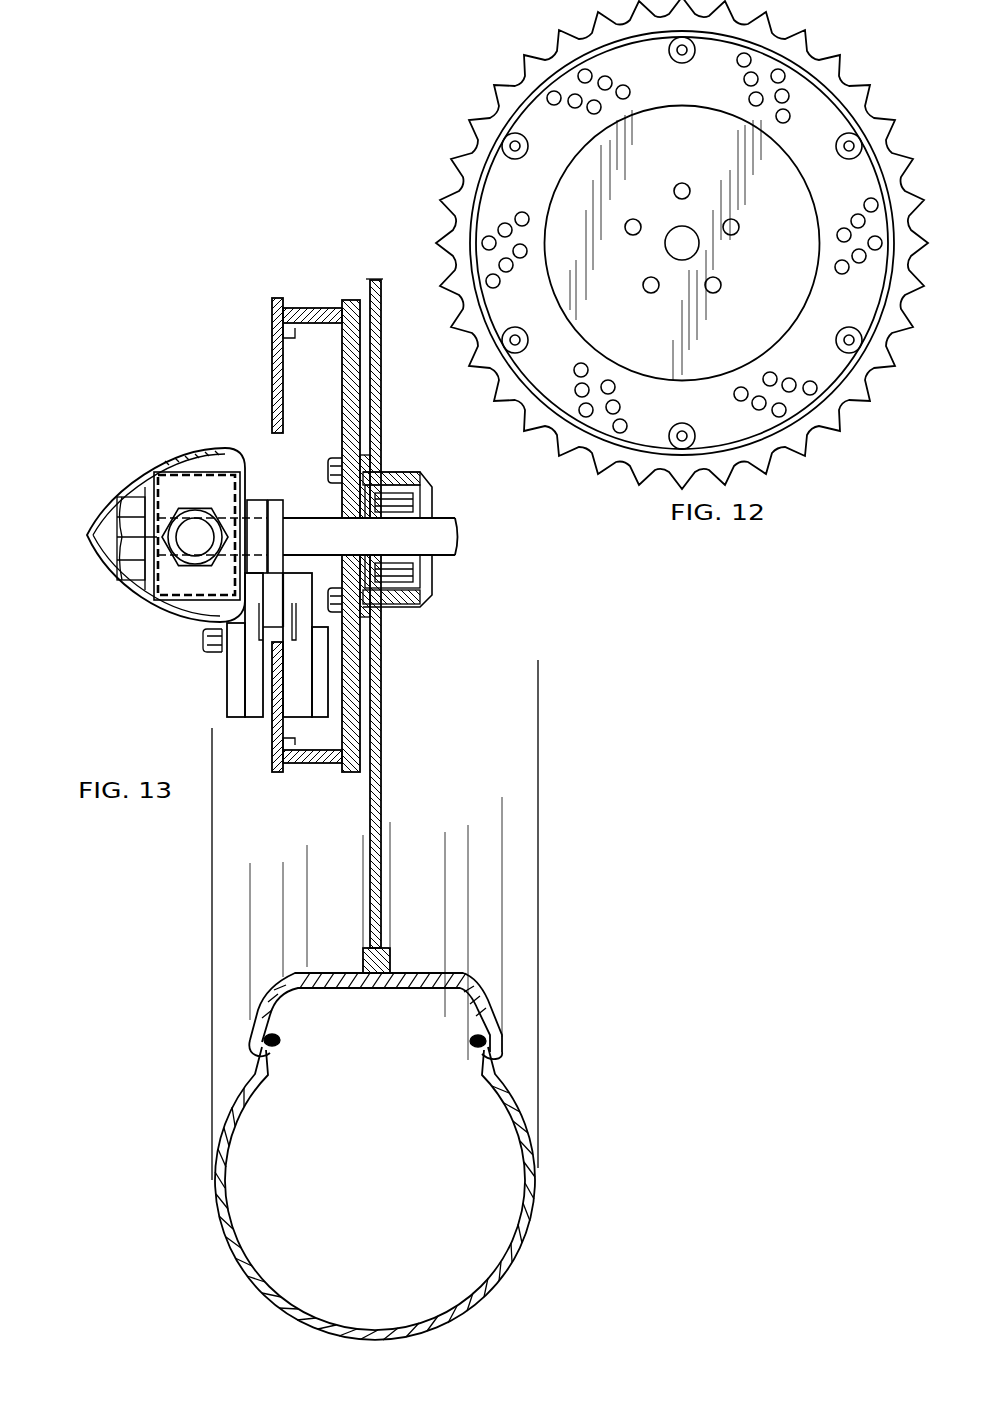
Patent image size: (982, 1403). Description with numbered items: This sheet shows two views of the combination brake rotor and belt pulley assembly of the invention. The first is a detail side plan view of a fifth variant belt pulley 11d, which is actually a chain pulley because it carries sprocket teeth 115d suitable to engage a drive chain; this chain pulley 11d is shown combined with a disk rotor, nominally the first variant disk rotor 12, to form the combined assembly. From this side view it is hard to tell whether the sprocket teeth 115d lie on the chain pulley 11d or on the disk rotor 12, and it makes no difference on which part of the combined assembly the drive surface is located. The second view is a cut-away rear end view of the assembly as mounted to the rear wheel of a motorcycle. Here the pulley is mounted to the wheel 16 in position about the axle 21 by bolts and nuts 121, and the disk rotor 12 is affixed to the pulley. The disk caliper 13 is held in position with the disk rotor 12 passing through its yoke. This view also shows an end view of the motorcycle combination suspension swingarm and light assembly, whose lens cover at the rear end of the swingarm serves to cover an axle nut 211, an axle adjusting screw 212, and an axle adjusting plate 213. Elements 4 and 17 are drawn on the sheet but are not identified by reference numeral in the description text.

In FIG. 12, the sprocket teeth 115d is at (562, 62).
In FIG. 12, the fifth variant belt pulley 11d is at (573, 187).
In FIG. 12, the first variant disk rotor 12 is at (498, 188).
In FIG. 13, the first variant disk rotor 12 is at (281, 774).
In FIG. 13, the bolts and nuts 121 is at (332, 458).
In FIG. 13, the axle 21 is at (315, 530).
In FIG. 13, the axle nut 211 is at (113, 538).
In FIG. 13, the axle adjusting screw 212 is at (165, 642).
In FIG. 13, the axle adjusting plate 213 is at (192, 542).
In FIG. 13, the disk caliper 13 is at (228, 678).
In FIG. 13, the frame plate 4 is at (357, 774).
In FIG. 13, the wheel 16 is at (409, 1219).
In FIG. 13, the wheel 17 is at (200, 1213).